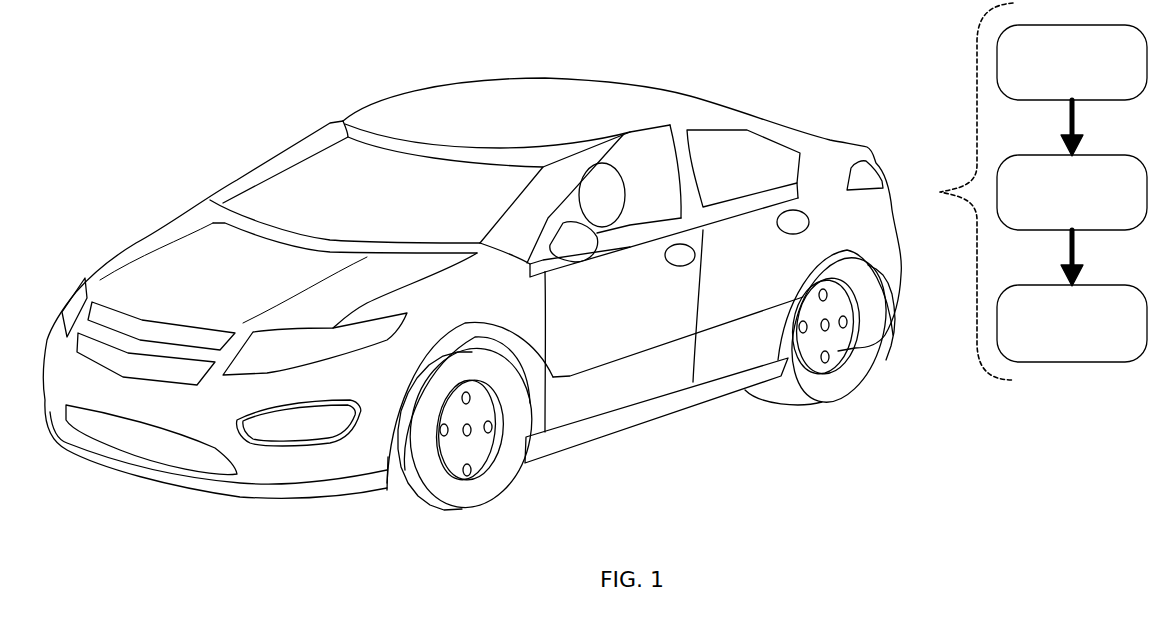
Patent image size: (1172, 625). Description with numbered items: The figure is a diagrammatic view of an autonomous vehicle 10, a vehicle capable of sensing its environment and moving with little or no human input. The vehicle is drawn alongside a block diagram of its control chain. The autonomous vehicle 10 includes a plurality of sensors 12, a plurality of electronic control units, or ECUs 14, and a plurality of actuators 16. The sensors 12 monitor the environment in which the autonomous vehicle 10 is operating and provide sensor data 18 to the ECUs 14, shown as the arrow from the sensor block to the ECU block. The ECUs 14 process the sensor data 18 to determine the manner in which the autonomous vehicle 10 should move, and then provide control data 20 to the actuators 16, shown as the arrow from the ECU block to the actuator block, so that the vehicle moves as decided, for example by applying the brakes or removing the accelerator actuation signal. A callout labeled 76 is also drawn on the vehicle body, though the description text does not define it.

The autonomous vehicle 10 is at (277, 160).
The vehicle component 76 is at (602, 195).
The sensors 12 is at (1072, 62).
The ECUs 14 is at (1072, 192).
The actuators 16 is at (1072, 323).
The sensor data 18 is at (1104, 128).
The control data 20 is at (1104, 258).